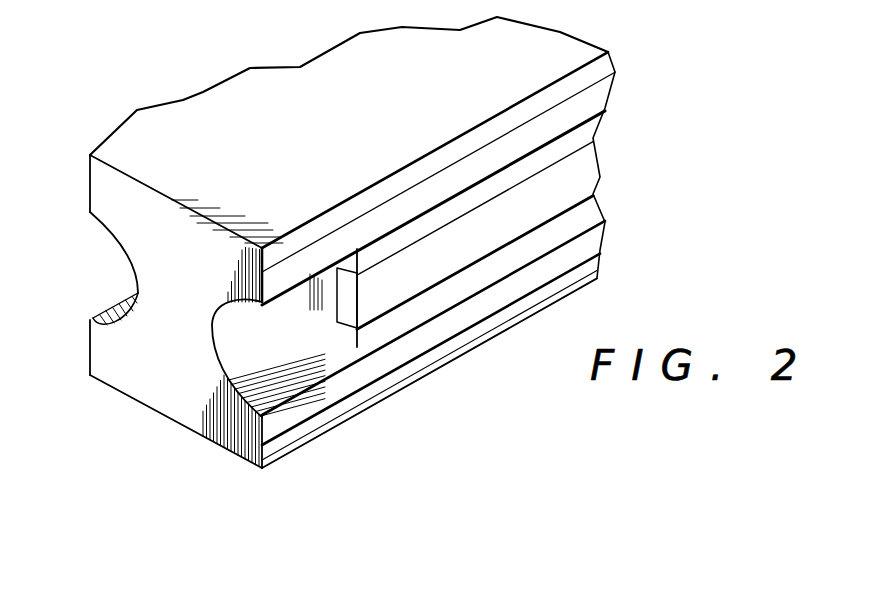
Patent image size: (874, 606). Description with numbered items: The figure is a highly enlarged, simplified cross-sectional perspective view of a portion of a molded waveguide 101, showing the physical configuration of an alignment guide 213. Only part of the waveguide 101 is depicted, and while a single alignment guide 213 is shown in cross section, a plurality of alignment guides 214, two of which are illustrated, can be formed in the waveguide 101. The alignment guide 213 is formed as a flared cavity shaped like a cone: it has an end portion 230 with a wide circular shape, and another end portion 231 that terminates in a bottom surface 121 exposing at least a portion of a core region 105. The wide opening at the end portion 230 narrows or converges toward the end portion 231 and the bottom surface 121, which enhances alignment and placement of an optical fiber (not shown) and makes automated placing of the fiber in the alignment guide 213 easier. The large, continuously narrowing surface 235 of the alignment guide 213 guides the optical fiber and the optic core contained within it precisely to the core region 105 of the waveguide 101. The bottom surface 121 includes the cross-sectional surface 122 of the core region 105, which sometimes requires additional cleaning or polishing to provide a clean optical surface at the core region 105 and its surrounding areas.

The waveguide 101 is at (745, 302).
The core region 105 is at (600, 177).
The bottom surface 121 is at (333, 313).
The cross-sectional surface 122 is at (348, 302).
The alignment guide 213 is at (353, 362).
The alignment guides 214 is at (210, 300).
The end portion 230 is at (135, 331).
The end portion 231 is at (354, 244).
The continuously narrowing surface 235 is at (232, 345).